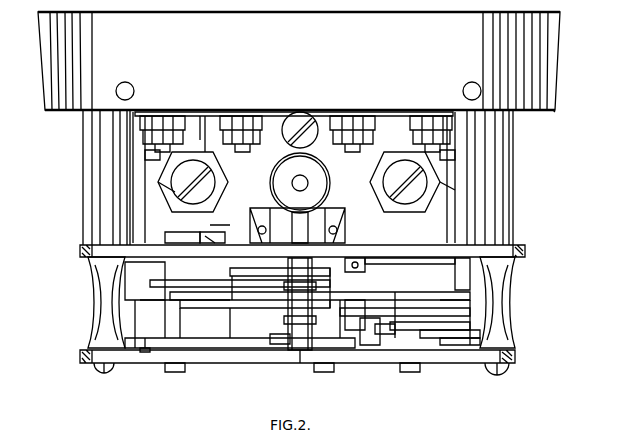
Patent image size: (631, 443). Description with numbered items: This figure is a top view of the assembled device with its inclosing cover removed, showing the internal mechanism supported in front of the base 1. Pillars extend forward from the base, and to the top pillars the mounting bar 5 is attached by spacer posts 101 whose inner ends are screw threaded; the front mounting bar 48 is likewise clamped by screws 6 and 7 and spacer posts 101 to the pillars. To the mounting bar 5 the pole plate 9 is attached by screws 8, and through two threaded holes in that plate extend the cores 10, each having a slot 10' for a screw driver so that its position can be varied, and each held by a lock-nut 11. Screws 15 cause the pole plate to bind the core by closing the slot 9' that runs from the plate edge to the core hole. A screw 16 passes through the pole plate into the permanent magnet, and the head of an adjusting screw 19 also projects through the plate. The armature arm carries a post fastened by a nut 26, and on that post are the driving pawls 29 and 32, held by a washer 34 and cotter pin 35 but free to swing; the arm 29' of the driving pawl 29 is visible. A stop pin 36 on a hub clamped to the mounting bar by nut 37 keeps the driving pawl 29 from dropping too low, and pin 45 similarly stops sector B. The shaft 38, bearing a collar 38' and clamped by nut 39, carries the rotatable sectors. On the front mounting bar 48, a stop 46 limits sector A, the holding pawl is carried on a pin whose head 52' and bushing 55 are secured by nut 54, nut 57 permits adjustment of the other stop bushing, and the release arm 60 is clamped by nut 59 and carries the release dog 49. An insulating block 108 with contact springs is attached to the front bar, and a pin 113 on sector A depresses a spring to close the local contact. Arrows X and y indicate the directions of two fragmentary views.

The base 1 is at (560, 80).
The mounting bar 5 is at (520, 245).
The screw 6 is at (505, 373).
The screw 7 is at (100, 373).
The screws 8 is at (420, 262).
The pole plate 9 is at (406, 231).
The slot 9' is at (296, 134).
The cores 10 is at (299, 182).
The slot 10' is at (261, 199).
The lock-nut 11 is at (430, 200).
The screws 15 is at (150, 160).
The screw 16 is at (305, 112).
The adjusting screw head 19 is at (330, 183).
The nut 26 is at (260, 275).
The driving pawl 29 is at (227, 281).
The arm of driving pawl 29' is at (320, 309).
The driving pawl 32 is at (316, 290).
The washer 34 is at (285, 348).
The cotter pin 35 is at (300, 363).
The pin 36 is at (165, 240).
The nut 37 is at (195, 232).
The shaft 38 is at (299, 195).
The collar 38' is at (343, 265).
The nut 39 is at (262, 205).
The pin 45 is at (380, 308).
The stop 46 is at (245, 352).
The front mounting bar 48 is at (515, 358).
The release dog 49 is at (445, 363).
The head of pin 52' is at (487, 322).
The nut 54 is at (430, 350).
The bushing 55 is at (395, 330).
The nut 57 is at (172, 372).
The nut 59 is at (340, 350).
The release arm 60 is at (372, 345).
The spacer posts 101 is at (105, 320).
The insulating block 108 is at (142, 350).
The pin 113 is at (324, 372).
The arrow x X is at (384, 228).
The arrow y is at (575, 321).